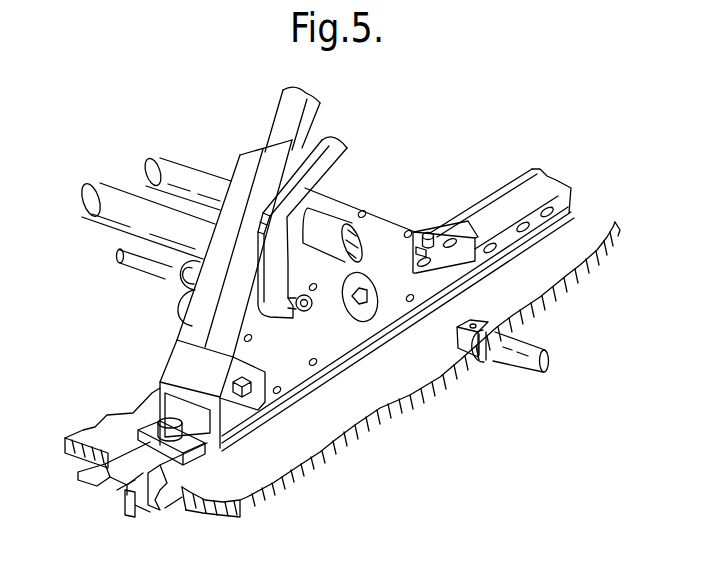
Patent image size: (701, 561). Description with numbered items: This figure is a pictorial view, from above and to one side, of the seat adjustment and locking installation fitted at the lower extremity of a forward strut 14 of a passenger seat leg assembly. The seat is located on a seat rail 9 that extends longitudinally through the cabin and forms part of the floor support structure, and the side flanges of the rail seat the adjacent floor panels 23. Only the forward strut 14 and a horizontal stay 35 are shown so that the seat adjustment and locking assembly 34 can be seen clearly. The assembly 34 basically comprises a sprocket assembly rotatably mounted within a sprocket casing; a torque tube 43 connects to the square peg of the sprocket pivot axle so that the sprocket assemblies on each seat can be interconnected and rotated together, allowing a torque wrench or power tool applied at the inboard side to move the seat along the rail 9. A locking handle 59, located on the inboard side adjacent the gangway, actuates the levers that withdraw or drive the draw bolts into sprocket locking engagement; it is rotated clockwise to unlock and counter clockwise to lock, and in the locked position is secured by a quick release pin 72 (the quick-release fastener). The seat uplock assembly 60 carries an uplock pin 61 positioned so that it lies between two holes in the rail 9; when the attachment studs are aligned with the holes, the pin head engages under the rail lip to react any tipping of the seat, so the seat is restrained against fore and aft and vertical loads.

The forward strut 14 is at (302, 103).
The locking handle 59 is at (330, 142).
The seat adjustment and locking assembly 34 is at (390, 208).
The uplock pin 61 is at (428, 232).
The seat uplock assembly 60 is at (471, 232).
The horizontal stay 35 is at (508, 198).
The torque tube 43 is at (112, 210).
The quick release pin 72 is at (145, 268).
The floor panels 23 is at (92, 420).
The seat rail 9 is at (120, 493).